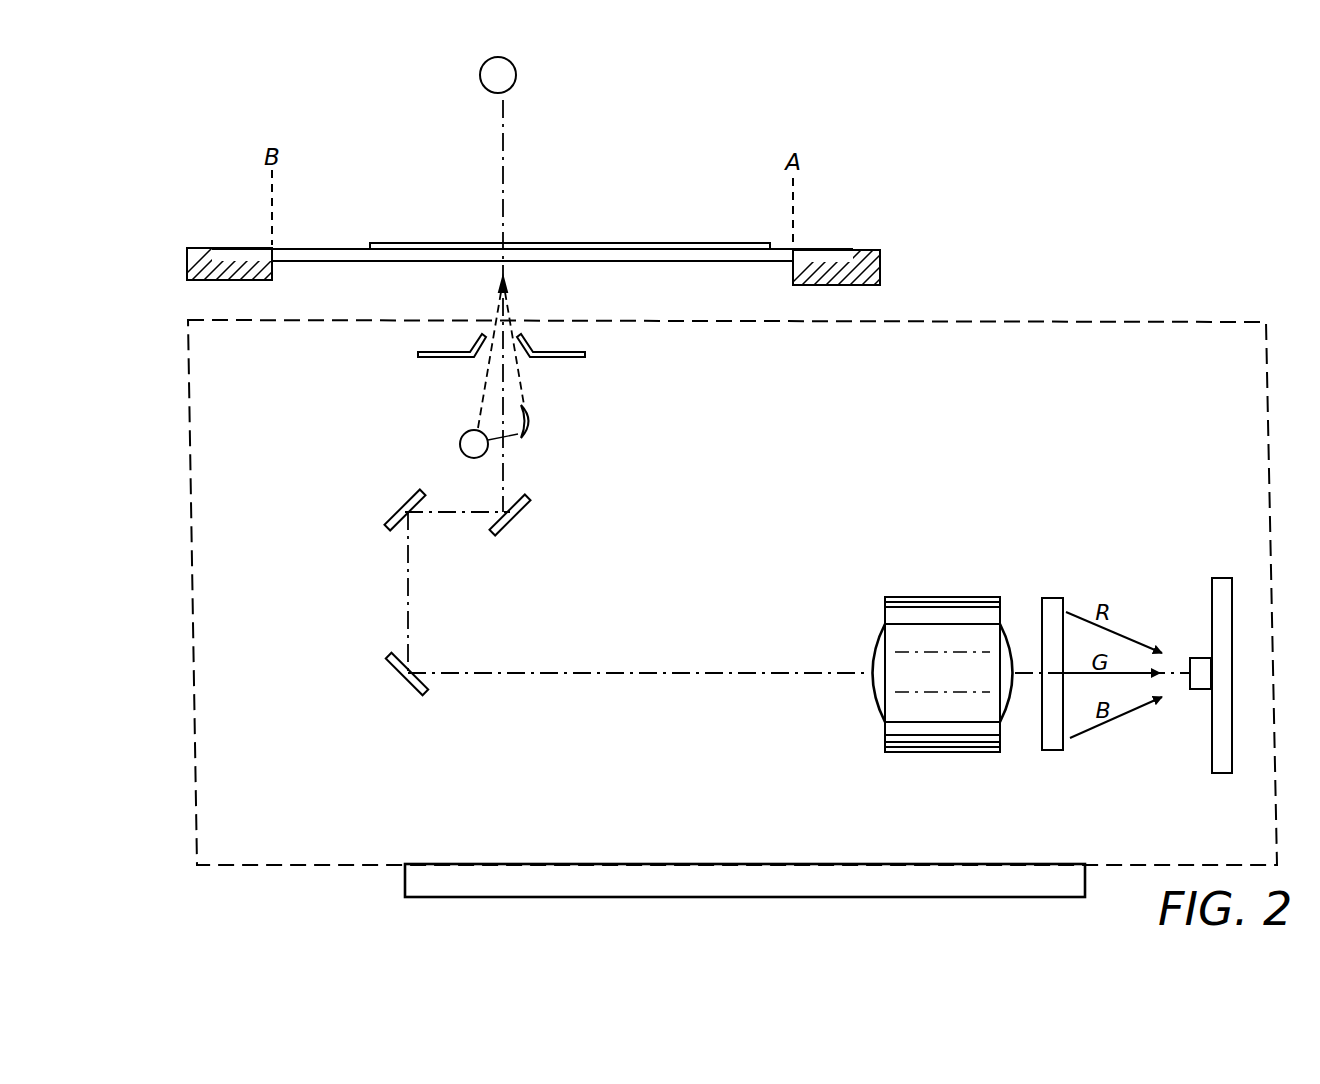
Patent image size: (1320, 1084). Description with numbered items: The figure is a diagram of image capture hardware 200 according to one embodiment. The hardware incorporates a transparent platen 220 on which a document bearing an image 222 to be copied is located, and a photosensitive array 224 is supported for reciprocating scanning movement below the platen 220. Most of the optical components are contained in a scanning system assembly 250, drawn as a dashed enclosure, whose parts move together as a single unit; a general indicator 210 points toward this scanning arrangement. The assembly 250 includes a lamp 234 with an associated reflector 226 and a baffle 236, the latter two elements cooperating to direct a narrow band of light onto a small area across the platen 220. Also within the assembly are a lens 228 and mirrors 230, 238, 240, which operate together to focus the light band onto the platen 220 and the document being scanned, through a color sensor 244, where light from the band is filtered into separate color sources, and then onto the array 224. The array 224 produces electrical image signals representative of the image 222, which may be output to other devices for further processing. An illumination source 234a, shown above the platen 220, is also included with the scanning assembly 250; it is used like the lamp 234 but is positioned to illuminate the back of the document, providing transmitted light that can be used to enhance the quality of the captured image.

The image capture hardware 200 is at (178, 822).
The projection apparatus 210 is at (1100, 262).
The transparent platen 220 is at (305, 248).
The image 222 is at (520, 243).
The photosensitive array 224 is at (1196, 692).
The reflector 226 is at (531, 422).
The lens 228 is at (918, 597).
The mirror 230 is at (396, 510).
The lamp 234 is at (466, 433).
The illumination source 234a is at (516, 73).
The baffle 236 is at (584, 358).
The mirror 238 is at (519, 514).
The mirror 240 is at (403, 681).
The color sensor 244 is at (1055, 598).
The scanning system assembly 250 is at (1170, 323).